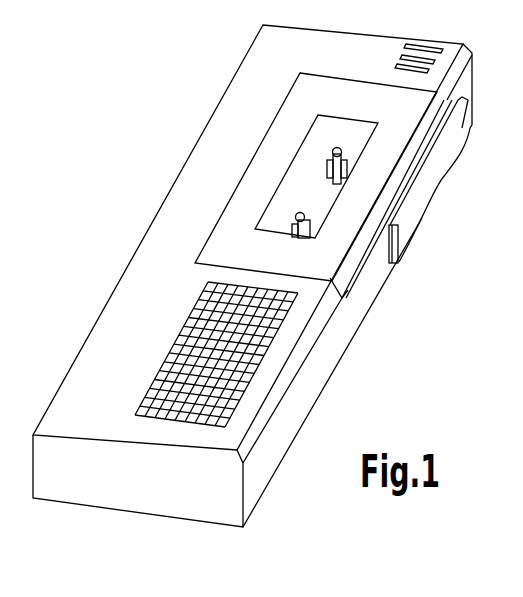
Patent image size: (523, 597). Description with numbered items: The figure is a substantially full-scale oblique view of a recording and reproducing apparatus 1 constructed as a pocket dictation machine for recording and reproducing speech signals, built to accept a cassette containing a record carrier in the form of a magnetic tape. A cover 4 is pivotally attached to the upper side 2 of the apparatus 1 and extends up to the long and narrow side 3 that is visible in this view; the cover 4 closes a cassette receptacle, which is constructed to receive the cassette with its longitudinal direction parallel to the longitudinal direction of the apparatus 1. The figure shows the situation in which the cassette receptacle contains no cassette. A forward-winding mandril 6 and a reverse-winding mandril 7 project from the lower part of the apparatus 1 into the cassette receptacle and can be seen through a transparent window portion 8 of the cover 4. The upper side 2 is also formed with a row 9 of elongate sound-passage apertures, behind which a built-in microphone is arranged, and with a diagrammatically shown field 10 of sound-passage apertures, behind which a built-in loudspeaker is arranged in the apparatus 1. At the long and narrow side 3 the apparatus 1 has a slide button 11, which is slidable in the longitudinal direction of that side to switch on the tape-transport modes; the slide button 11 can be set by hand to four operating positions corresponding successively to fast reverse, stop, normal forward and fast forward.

The recording and reproducing apparatus 1 is at (162, 196).
The upper side 2 is at (308, 62).
The long and narrow side 3 is at (326, 367).
The cover 4 is at (333, 279).
The forward-winding mandril 6 is at (300, 212).
The reverse-winding mandril 7 is at (327, 177).
The transparent window portion 8 is at (328, 123).
The row of elongate sound-passage apertures 9 is at (390, 53).
The field of sound-passage apertures 10 is at (160, 352).
The slide button 11 is at (450, 171).